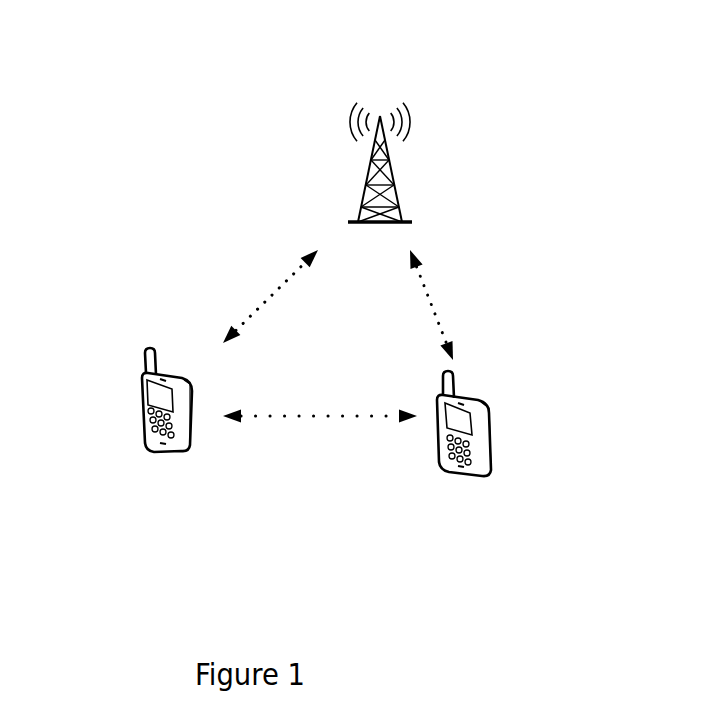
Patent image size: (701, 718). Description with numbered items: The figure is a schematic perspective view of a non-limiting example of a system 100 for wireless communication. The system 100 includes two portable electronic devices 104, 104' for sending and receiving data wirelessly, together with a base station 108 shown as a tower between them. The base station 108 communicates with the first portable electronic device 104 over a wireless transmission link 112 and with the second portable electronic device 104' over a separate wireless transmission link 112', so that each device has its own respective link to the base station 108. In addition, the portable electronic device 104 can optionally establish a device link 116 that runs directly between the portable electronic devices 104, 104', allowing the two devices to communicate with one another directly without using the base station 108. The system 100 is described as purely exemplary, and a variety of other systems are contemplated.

The system 100 is at (160, 180).
The portable electronic device 104 is at (117, 435).
The portable electronic device 104' is at (519, 459).
The base station 108 is at (400, 163).
The wireless transmission link 112 is at (221, 296).
The wireless transmission link 112' is at (485, 305).
The device link 116 is at (333, 416).